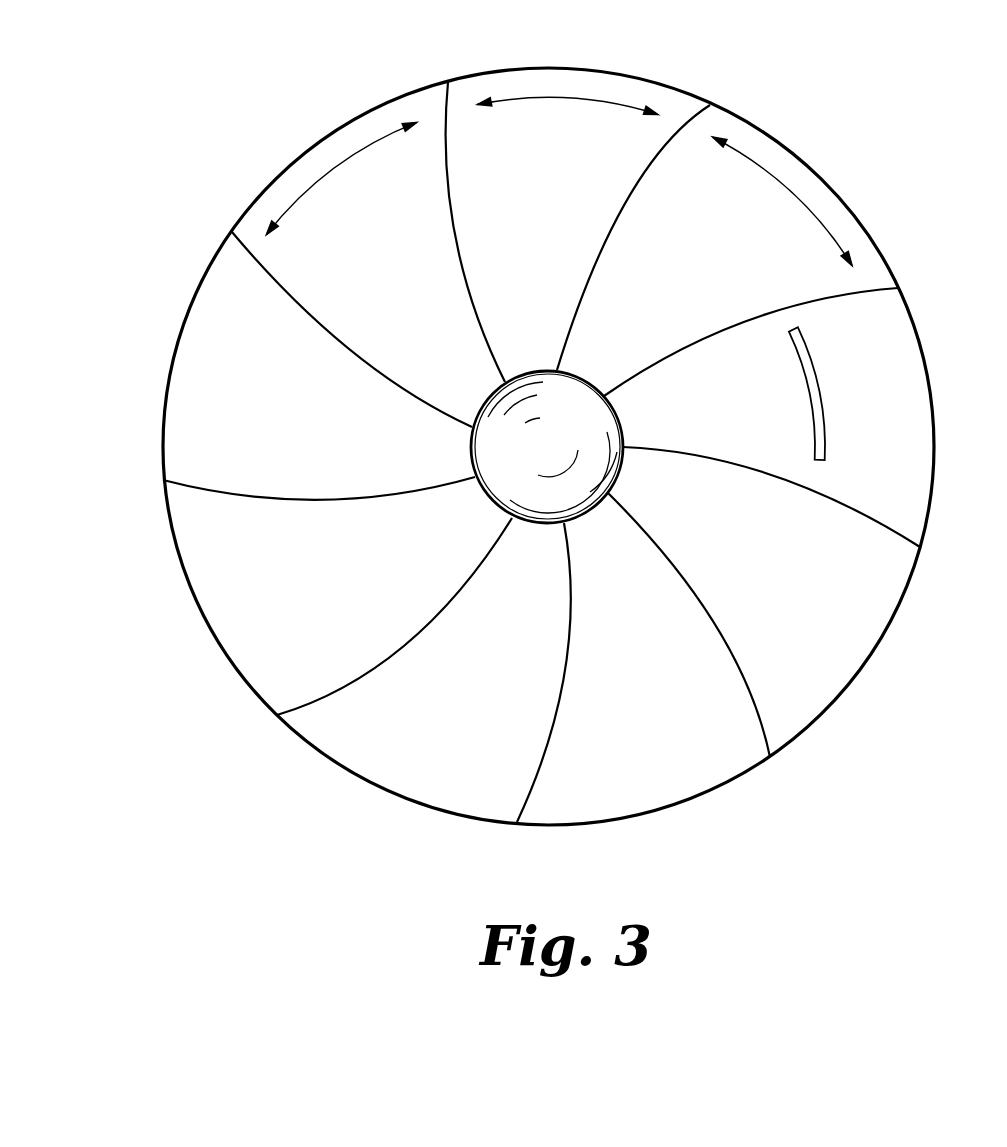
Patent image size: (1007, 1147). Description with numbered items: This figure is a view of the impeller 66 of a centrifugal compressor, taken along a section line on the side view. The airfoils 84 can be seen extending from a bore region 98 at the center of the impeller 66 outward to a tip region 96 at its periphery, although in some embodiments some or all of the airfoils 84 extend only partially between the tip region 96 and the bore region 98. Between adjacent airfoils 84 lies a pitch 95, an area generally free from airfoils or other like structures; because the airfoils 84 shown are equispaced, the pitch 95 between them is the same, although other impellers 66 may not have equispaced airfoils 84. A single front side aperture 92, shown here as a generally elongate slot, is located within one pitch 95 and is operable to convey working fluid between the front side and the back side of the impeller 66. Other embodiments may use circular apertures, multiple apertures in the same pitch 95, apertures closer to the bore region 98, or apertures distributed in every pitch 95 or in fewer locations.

The impeller 66 is at (145, 115).
The airfoils 84 is at (447, 197).
The front side aperture 92 is at (820, 383).
The pitch 95 is at (562, 98).
The tip region 96 is at (780, 58).
The bore region 98 is at (552, 460).